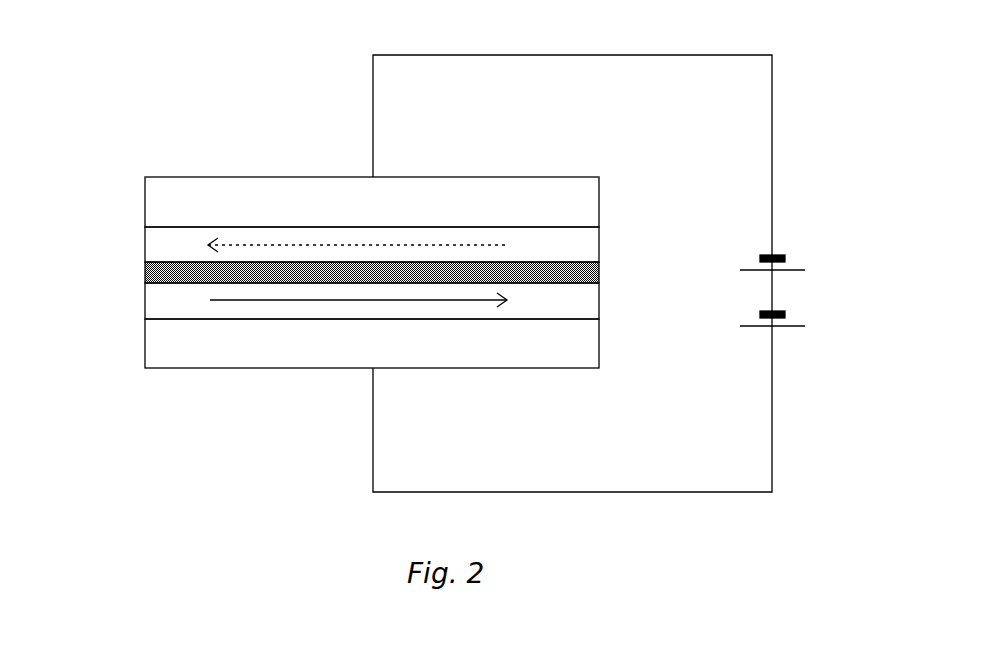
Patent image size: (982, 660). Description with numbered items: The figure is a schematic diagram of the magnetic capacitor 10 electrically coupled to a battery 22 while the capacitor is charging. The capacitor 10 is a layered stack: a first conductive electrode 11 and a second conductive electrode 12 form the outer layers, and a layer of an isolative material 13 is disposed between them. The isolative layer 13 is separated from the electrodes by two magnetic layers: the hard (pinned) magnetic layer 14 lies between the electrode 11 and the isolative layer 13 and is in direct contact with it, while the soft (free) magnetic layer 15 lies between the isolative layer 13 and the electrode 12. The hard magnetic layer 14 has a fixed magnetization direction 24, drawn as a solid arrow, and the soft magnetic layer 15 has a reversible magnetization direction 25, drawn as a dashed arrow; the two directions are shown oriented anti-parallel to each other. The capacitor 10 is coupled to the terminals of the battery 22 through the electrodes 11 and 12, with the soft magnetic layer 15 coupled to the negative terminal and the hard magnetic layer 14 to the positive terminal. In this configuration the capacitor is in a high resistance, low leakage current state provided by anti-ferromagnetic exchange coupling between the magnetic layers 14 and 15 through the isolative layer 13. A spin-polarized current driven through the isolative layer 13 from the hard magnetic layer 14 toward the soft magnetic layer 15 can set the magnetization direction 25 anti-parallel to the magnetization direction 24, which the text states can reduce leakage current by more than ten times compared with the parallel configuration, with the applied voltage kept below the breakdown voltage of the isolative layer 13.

The magnetic capacitor 10 is at (572, 273).
The first conductive electrode 11 is at (324, 347).
The second conductive electrode 12 is at (324, 202).
The isolative layer 13 is at (324, 277).
The hard magnetic layer 14 is at (324, 306).
The soft magnetic layer 15 is at (324, 244).
The battery 22 is at (784, 251).
The fixed magnetization direction 24 is at (358, 361).
The reversible magnetization direction 25 is at (356, 188).